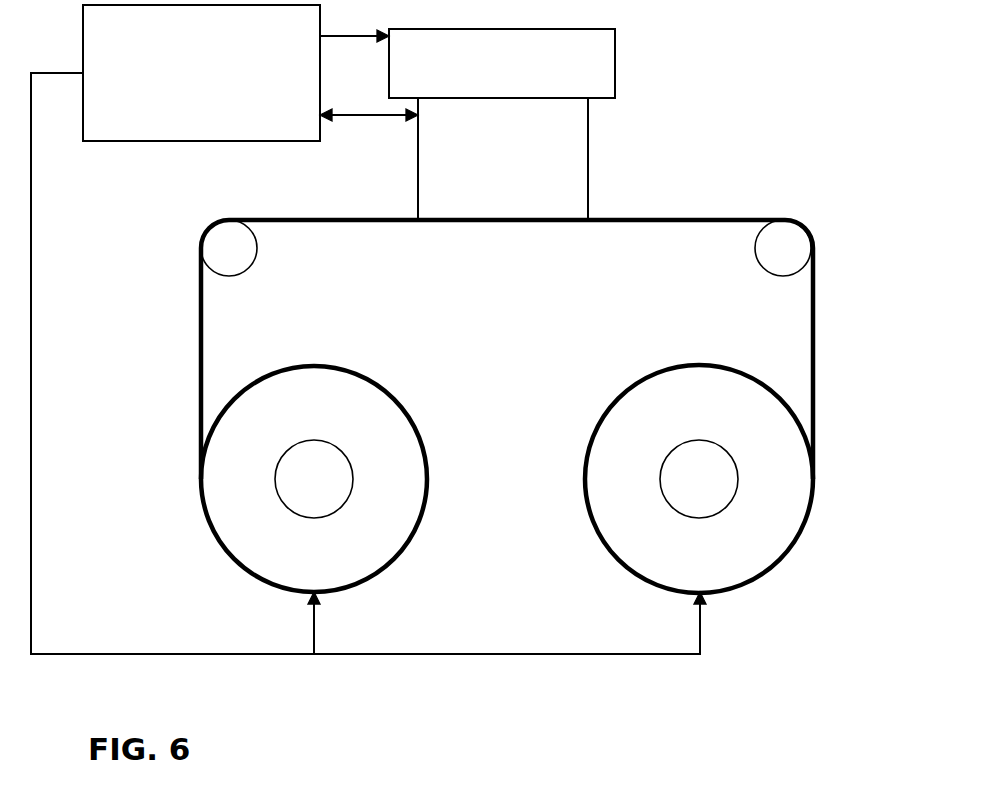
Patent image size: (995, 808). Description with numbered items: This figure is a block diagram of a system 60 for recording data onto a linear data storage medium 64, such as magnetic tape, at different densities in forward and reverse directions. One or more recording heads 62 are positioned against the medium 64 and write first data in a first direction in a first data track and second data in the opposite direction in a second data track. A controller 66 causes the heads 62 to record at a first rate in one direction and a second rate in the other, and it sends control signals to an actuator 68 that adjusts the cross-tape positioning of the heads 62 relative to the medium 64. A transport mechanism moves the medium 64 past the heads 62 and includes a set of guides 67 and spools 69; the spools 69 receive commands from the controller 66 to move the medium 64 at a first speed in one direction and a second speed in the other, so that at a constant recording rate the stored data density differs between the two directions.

The system 60 is at (746, 95).
The recording heads 62 is at (488, 184).
The linear data storage medium 64 is at (200, 323).
The controller 66 is at (186, 99).
The guides 67 is at (218, 248).
The actuator 68 is at (487, 90).
The spools 69 is at (353, 480).